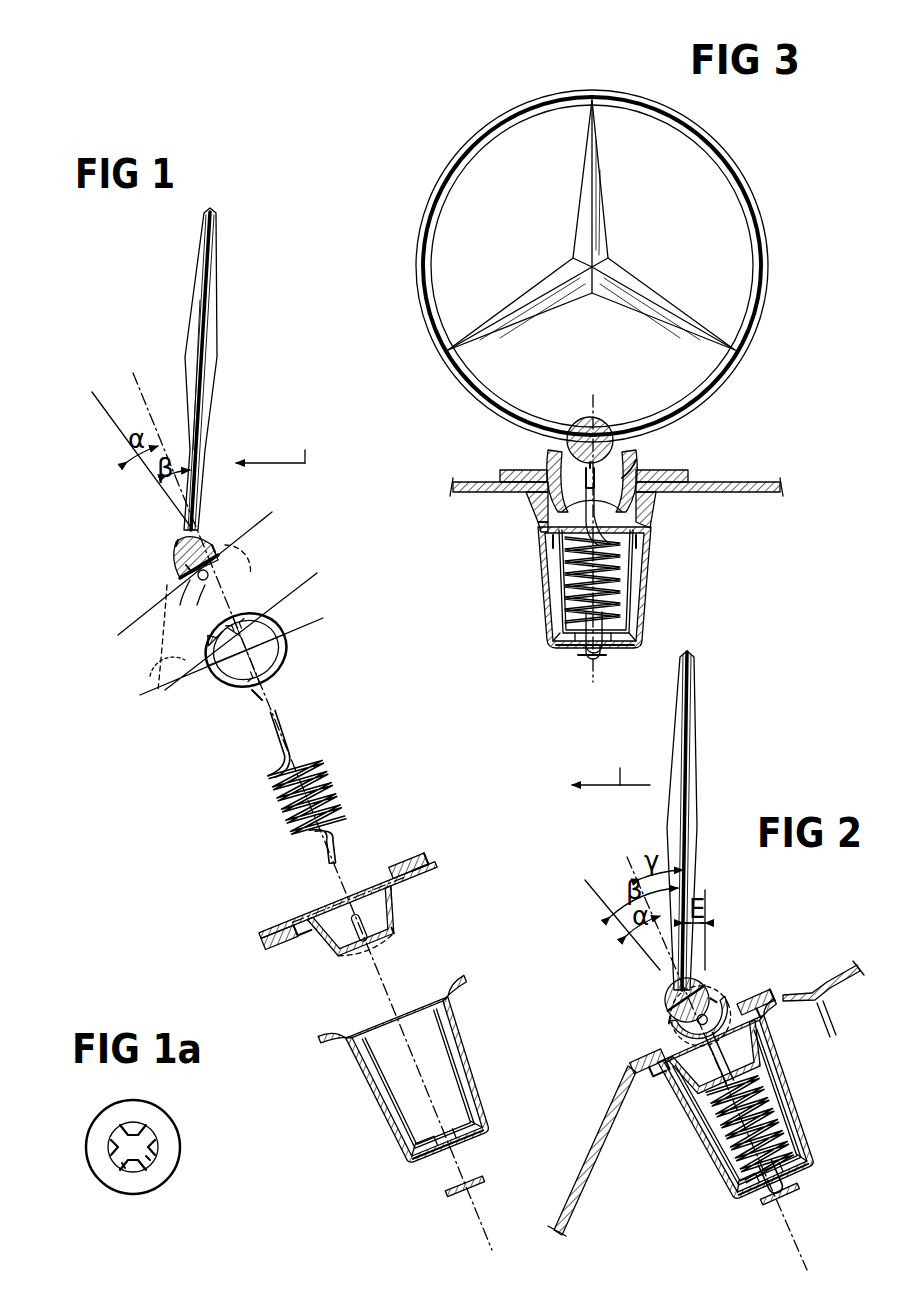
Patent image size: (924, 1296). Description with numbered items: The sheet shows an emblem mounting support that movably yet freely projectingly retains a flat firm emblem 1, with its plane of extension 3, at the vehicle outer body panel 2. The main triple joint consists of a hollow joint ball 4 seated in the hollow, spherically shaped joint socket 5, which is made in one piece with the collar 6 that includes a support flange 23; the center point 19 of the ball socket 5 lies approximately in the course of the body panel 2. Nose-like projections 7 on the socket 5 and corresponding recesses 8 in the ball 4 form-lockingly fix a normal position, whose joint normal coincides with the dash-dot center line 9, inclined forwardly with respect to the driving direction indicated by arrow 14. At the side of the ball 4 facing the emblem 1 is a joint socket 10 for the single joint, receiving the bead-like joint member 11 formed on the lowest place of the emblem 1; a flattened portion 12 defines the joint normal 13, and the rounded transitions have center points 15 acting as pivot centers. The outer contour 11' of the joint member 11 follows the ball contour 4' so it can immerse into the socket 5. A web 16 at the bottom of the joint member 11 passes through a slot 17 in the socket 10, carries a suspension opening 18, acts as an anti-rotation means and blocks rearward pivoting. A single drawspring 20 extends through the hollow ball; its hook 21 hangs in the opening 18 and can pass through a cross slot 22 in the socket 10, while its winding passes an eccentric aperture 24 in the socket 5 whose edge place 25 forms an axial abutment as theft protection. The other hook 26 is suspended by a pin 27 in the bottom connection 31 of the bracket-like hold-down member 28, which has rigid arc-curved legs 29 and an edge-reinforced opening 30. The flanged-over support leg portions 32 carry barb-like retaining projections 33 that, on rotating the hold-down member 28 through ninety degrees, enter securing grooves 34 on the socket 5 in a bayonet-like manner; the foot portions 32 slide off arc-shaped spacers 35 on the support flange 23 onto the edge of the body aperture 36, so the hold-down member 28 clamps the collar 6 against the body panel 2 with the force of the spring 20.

In FIG. 3, the firm emblem 1 is at (726, 147).
In FIG. 1, the firm emblem 1 is at (212, 410).
In FIG. 2, the firm emblem 1 is at (696, 706).
In FIG. 3, the vehicle outer body panel 2 is at (757, 484).
In FIG. 2, the vehicle outer body panel 2 is at (589, 1151).
In FIG. 1, the plane of extension 3 is at (207, 356).
In FIG. 3, the hollow joint ball 4 is at (573, 476).
In FIG. 1, the hollow joint ball 4 is at (243, 653).
In FIG. 1A, the hollow joint ball 4 is at (137, 1141).
In FIG. 2, the hollow joint ball 4 is at (702, 1009).
In FIG. 1, the contour of the ball 4' is at (247, 553).
In FIG. 3, the joint socket 5 is at (540, 506).
In FIG. 1, the joint socket 5 is at (327, 909).
In FIG. 2, the joint socket 5 is at (665, 1085).
In FIG. 3, the collar 6 is at (512, 474).
In FIG. 1, the collar 6 is at (427, 877).
In FIG. 2, the collar 6 is at (769, 1001).
In FIG. 1, the nose-like projections 7 is at (253, 701).
In FIG. 3, the recesses 8 is at (540, 530).
In FIG. 1, the recesses 8 is at (371, 941).
In FIG. 3, the center line 9 is at (592, 681).
In FIG. 1, the center line 9 is at (158, 396).
In FIG. 2, the center line 9 is at (633, 857).
In FIG. 1, the joint socket 10 is at (224, 633).
In FIG. 1A, the joint socket 10 is at (111, 1151).
In FIG. 3, the joint member 11 is at (586, 427).
In FIG. 1, the joint member 11 is at (200, 538).
In FIG. 2, the joint member 11 is at (673, 1000).
In FIG. 1, the outer contour of the joint member 11' is at (165, 570).
In FIG. 1, the flattened portion 12 is at (167, 665).
In FIG. 1, the joint normal 13 is at (125, 477).
In FIG. 2, the joint normal 13 is at (649, 976).
In FIG. 1, the arrow 14 is at (283, 462).
In FIG. 2, the arrow 14 is at (619, 780).
In FIG. 1, the center points 15 is at (176, 553).
In FIG. 2, the center points 15 is at (663, 1021).
In FIG. 3, the web 16 is at (584, 485).
In FIG. 1, the web 16 is at (185, 601).
In FIG. 1A, the slot 17 is at (124, 1167).
In FIG. 1, the suspension opening 18 is at (204, 596).
In FIG. 1, the center point 19 is at (210, 578).
In FIG. 2, the center point 19 is at (702, 1023).
In FIG. 3, the drawspring 20 is at (620, 592).
In FIG. 1, the drawspring 20 is at (330, 791).
In FIG. 2, the drawspring 20 is at (751, 1126).
In FIG. 3, the hook 21 is at (645, 493).
In FIG. 1, the hook 21 is at (279, 749).
In FIG. 1A, the cross slot 22 is at (151, 1159).
In FIG. 1, the support flange 23 is at (271, 951).
In FIG. 3, the aperture 24 is at (590, 508).
In FIG. 1, the aperture 24 is at (391, 929).
In FIG. 2, the aperture 24 is at (790, 1104).
In FIG. 1, the edge place 25 is at (345, 959).
In FIG. 2, the edge place 25 is at (693, 1126).
In FIG. 3, the hook 26 is at (601, 662).
In FIG. 1, the hook 26 is at (317, 853).
In FIG. 2, the hook 26 is at (777, 1216).
In FIG. 3, the pin 27 is at (583, 656).
In FIG. 1, the pin 27 is at (485, 1179).
In FIG. 2, the pin 27 is at (747, 1201).
In FIG. 3, the hold-down member 28 is at (538, 601).
In FIG. 1, the hold-down member 28 is at (369, 1113).
In FIG. 2, the hold-down member 28 is at (799, 1141).
In FIG. 3, the legs 29 is at (640, 572).
In FIG. 1, the legs 29 is at (454, 1081).
In FIG. 2, the legs 29 is at (742, 1109).
In FIG. 3, the opening 30 is at (632, 635).
In FIG. 1, the opening 30 is at (454, 1151).
In FIG. 2, the opening 30 is at (799, 1179).
In FIG. 3, the bottom connection 31 is at (622, 650).
In FIG. 1, the bottom connection 31 is at (411, 1171).
In FIG. 2, the bottom connection 31 is at (744, 1206).
In FIG. 1, the support leg portions 32 is at (324, 1029).
In FIG. 2, the support leg portions 32 is at (769, 1015).
In FIG. 3, the retaining projections 33 is at (656, 511).
In FIG. 1, the retaining projections 33 is at (440, 1019).
In FIG. 3, the securing grooves 34 is at (644, 537).
In FIG. 1, the securing grooves 34 is at (371, 961).
In FIG. 1, the spacers 35 is at (435, 889).
In FIG. 2, the spacers 35 is at (639, 1081).
In FIG. 3, the body aperture 36 is at (683, 481).